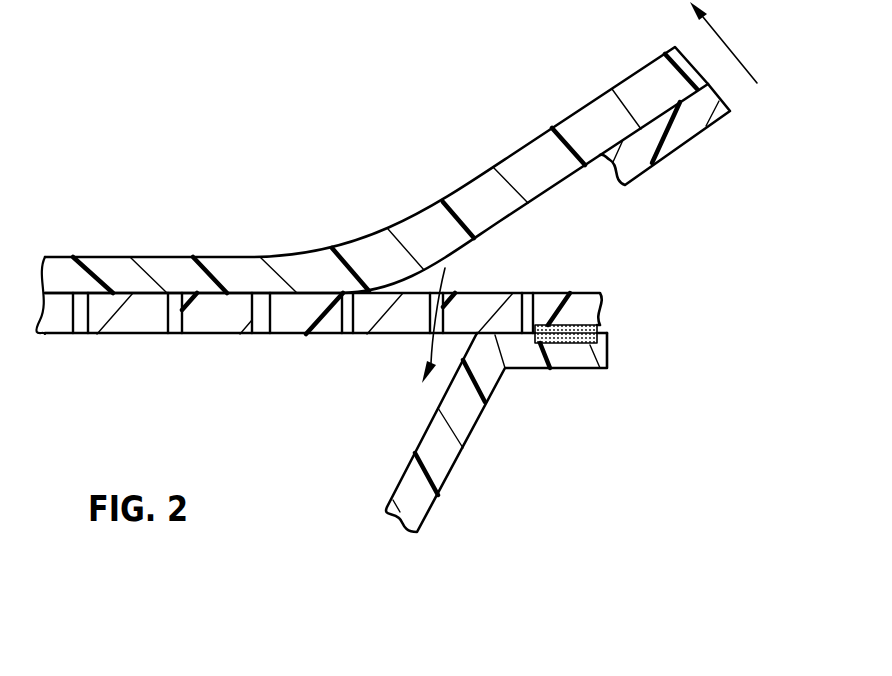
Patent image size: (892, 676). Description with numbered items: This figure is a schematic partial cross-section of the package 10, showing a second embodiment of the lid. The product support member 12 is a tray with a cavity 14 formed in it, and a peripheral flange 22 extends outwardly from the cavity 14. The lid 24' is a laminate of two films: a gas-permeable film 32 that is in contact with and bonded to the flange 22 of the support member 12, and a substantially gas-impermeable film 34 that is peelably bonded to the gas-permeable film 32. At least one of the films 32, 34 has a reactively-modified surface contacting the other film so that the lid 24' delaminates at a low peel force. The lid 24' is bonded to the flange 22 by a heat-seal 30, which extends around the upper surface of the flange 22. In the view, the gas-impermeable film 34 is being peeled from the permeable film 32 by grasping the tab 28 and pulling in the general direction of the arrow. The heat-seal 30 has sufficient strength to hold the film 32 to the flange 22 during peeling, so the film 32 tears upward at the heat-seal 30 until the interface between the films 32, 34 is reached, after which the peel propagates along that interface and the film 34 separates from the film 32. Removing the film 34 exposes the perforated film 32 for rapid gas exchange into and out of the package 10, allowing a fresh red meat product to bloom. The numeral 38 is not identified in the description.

The package 10 is at (313, 183).
The product support member 12 is at (490, 498).
The cavity 14 is at (393, 443).
The peripheral flange 22 is at (567, 368).
The lid 24' is at (372, 190).
The tab 28 is at (650, 62).
The heat-seal 30 is at (598, 325).
The gas-permeable film 32 is at (215, 335).
The gas-impermeable film 34 is at (343, 247).
The fasteners 38 is at (262, 335).